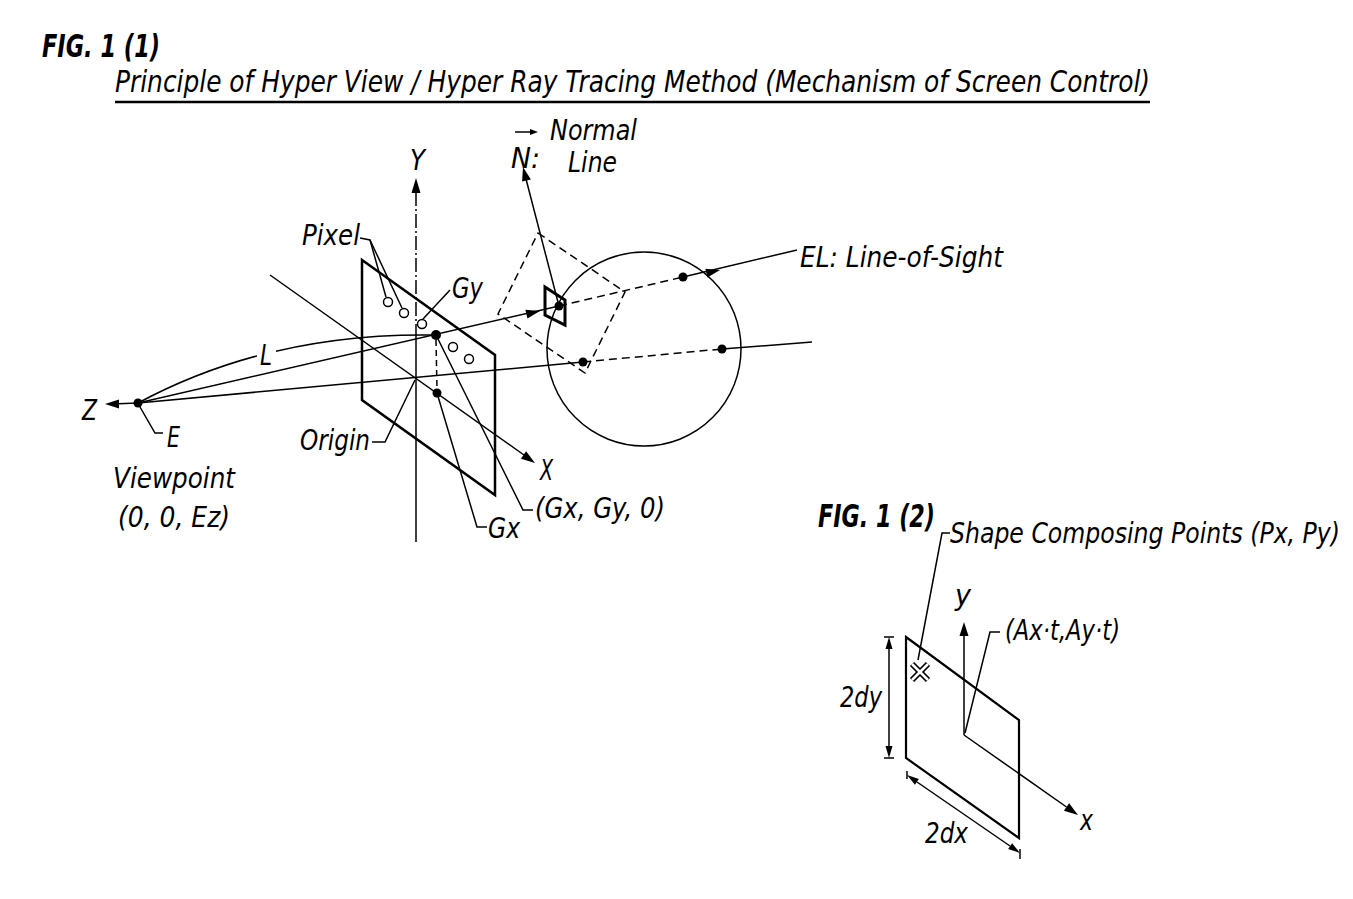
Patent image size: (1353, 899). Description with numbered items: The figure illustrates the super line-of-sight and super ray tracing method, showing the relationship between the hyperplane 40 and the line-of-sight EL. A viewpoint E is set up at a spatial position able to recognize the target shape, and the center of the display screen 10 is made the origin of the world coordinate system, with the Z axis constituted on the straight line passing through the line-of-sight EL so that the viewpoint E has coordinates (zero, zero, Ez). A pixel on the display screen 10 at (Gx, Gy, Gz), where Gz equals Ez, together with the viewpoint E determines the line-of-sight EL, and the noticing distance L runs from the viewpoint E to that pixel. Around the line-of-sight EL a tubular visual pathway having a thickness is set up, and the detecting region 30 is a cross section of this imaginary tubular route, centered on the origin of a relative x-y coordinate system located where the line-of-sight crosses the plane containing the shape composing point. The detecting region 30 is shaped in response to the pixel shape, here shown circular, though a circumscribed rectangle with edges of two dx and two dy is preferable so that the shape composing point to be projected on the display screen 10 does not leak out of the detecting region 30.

The display screen 10 is at (514, 462).
The detecting region 30 is at (730, 267).
The hyperplane 40 is at (594, 275).